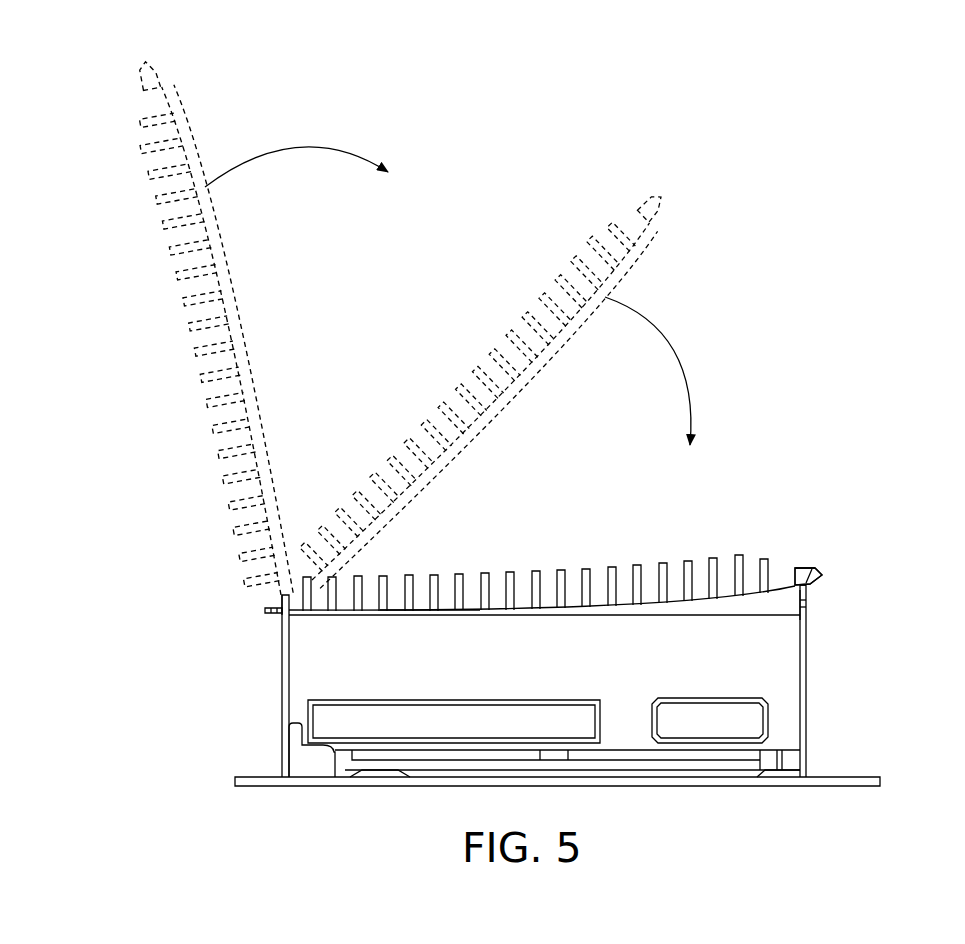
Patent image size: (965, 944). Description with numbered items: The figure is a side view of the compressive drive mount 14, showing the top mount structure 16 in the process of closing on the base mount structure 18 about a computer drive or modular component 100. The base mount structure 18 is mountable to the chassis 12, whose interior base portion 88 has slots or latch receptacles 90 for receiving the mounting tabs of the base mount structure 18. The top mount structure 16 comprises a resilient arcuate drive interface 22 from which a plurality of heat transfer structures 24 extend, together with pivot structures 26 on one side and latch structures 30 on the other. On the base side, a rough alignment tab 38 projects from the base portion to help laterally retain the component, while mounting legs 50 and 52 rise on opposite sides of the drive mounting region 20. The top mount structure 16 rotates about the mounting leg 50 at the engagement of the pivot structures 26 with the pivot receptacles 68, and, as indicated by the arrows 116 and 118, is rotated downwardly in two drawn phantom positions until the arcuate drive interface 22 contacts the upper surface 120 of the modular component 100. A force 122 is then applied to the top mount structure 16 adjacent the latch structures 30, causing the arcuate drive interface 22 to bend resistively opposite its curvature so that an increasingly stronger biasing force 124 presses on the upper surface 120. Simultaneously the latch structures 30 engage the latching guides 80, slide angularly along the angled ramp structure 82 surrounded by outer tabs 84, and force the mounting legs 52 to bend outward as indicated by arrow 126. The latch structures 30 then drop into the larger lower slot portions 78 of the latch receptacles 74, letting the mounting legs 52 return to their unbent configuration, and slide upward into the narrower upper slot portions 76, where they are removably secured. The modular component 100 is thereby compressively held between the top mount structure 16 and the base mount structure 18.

The chassis 12 is at (903, 772).
The compressive drive mount 14 is at (765, 412).
The top mount structure 16 is at (85, 172).
The base mount structure 18 is at (248, 750).
The drive mounting region 20 is at (708, 606).
The arcuate drive interface 22 is at (232, 287).
The heat transfer structures 24 is at (200, 330).
The pivot structures 26 is at (265, 622).
The latch structures 30 is at (155, 80).
The rough alignment tab 38 is at (312, 760).
The mounting leg 50 is at (282, 682).
The mounting legs 52 is at (806, 722).
The pivot receptacles 68 is at (258, 606).
The latch receptacles 74 is at (893, 620).
The upper slot portions 76 is at (807, 600).
The lower slot portions 78 is at (807, 607).
The latching guides 80 is at (843, 565).
The ramp structure 82 is at (822, 578).
The outer tabs 84 is at (808, 570).
The interior base portion 88 is at (857, 786).
The latch receptacles 90 is at (385, 775).
The modular component 100 is at (625, 720).
The arrow 116 is at (305, 150).
The arrow 118 is at (662, 358).
The upper surface 120 is at (428, 616).
The force 122 is at (757, 537).
The biasing force 124 is at (450, 606).
The arrow 126 is at (822, 688).